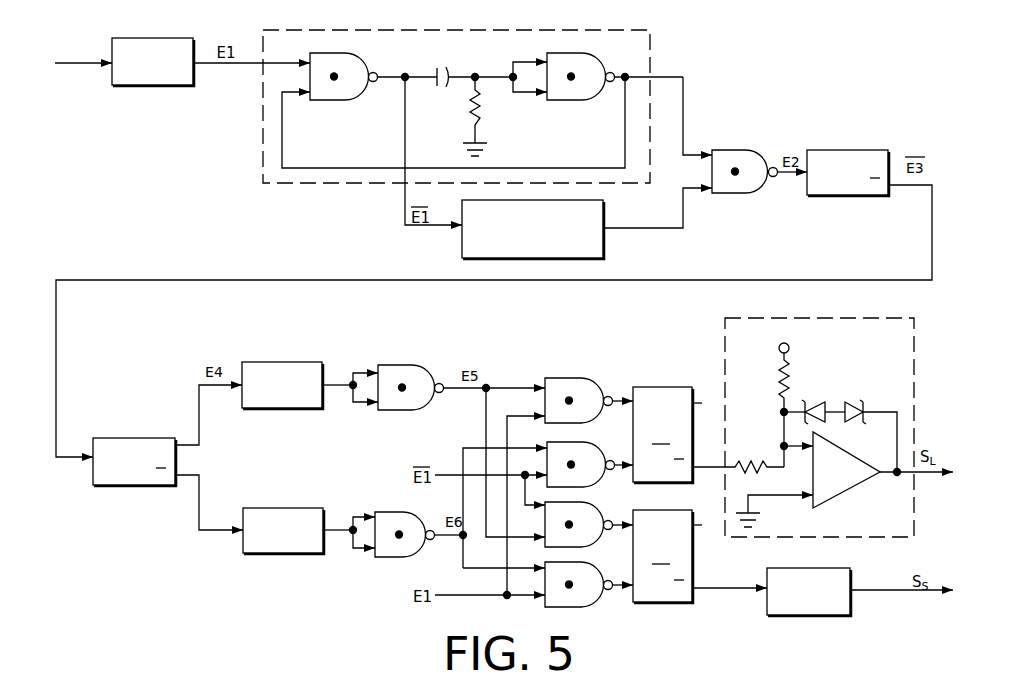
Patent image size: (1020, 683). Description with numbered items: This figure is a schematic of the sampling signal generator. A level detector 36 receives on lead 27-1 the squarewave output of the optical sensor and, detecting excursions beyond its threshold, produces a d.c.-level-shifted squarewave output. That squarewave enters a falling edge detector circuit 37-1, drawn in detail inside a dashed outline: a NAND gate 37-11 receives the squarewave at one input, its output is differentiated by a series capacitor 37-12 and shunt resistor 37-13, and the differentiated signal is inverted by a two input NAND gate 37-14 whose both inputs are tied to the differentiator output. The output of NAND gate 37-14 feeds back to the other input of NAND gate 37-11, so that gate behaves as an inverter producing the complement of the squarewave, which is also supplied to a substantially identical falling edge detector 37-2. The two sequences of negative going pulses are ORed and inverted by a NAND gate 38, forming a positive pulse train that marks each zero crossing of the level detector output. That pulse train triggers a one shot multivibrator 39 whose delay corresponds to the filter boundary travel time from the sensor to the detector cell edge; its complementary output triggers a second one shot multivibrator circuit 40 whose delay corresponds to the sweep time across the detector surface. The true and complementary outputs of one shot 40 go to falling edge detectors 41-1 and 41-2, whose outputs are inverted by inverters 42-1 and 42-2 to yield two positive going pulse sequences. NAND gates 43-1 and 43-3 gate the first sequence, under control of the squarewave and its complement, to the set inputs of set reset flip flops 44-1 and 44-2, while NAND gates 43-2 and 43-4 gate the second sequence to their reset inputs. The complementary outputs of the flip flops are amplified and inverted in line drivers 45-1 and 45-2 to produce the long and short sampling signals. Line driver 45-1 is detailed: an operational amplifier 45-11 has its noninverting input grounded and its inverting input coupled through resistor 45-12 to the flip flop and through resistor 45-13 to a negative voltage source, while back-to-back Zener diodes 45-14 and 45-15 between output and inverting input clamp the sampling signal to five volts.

The lead 27-1 is at (63, 62).
The level detector 36 is at (185, 38).
The falling edge detector circuit 37-1 is at (617, 30).
The NAND gate 37-11 is at (356, 43).
The series capacitor 37-12 is at (441, 67).
The shunt resistor 37-13 is at (480, 112).
The two input NAND gate 37-14 is at (597, 43).
The falling edge detector 37-2 is at (611, 211).
The NAND gate 38 is at (787, 140).
The one shot multivibrator 39 is at (882, 150).
The one shot multivibrator circuit 40 is at (154, 438).
The falling edge detector 41-1 is at (308, 362).
The falling edge detector 41-2 is at (309, 508).
The inverter 42-1 is at (418, 365).
The inverter 42-2 is at (410, 512).
The NAND gate 43-1 is at (586, 378).
The NAND gate 43-2 is at (588, 442).
The NAND gate 43-3 is at (586, 502).
The NAND gate 43-4 is at (586, 562).
The set reset flip flop 44-1 is at (676, 387).
The set reset flip flop 44-2 is at (672, 510).
The line driver 45-1 is at (885, 318).
The operational amplifier 45-11 is at (843, 447).
The resistor 45-12 is at (757, 466).
The resistor 45-13 is at (787, 360).
The Zener diode 45-14 is at (827, 399).
The Zener diode 45-15 is at (857, 408).
The line driver 45-2 is at (835, 568).